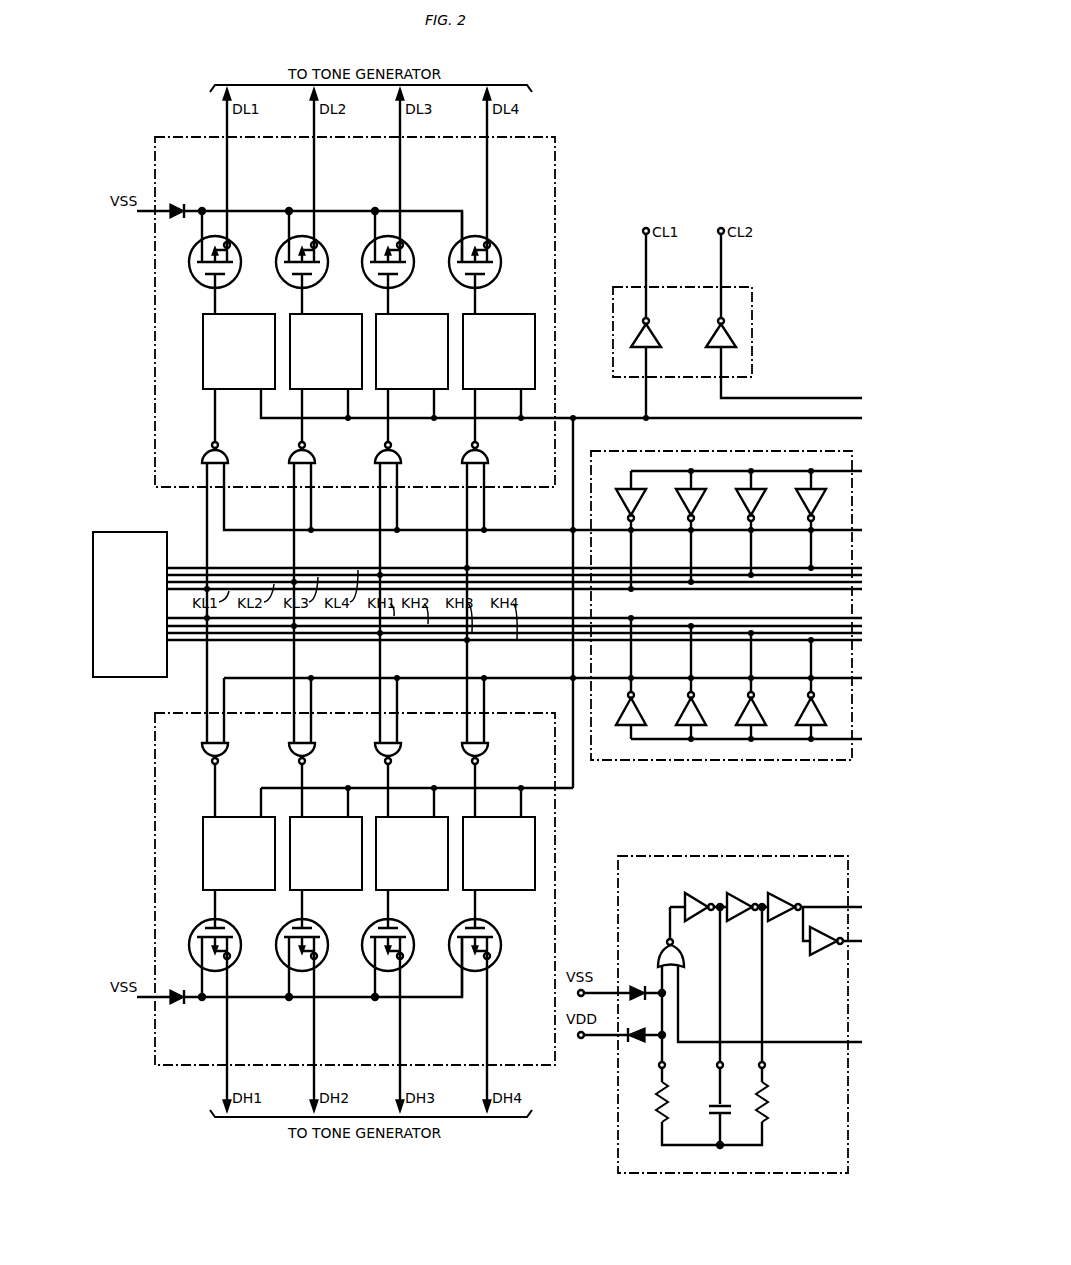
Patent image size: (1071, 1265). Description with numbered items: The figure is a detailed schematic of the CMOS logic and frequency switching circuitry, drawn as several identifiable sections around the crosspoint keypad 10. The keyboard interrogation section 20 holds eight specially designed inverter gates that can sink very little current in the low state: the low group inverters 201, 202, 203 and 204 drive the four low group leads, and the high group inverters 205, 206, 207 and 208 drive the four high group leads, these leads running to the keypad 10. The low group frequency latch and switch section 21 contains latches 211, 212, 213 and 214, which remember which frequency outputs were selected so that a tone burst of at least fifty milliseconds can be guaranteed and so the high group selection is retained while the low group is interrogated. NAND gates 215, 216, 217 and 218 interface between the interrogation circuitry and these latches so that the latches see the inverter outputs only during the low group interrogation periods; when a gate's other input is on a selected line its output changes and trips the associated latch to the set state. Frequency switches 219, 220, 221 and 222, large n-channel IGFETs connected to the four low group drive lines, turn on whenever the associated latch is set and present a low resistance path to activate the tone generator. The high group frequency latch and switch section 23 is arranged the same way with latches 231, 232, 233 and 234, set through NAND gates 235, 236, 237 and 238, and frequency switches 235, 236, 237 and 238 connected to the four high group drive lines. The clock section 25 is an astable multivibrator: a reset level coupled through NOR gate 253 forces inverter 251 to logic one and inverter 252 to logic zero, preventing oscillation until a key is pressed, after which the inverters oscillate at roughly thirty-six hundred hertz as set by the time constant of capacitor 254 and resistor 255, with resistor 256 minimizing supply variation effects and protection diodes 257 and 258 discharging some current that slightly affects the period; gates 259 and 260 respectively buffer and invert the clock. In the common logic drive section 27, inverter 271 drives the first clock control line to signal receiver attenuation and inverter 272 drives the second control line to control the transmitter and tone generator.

The keypad 10 is at (128, 534).
The keyboard interrogation section 20 is at (721, 748).
The low group frequency latch and switch section 21 is at (170, 327).
The high group frequency latch and switch section 23 is at (170, 850).
The clock section 25 is at (761, 859).
The common logic drive section 27 is at (745, 350).
The low group inverter 201 is at (640, 505).
The low group inverter 202 is at (700, 505).
The low group inverter 203 is at (760, 505).
The low group inverter 204 is at (820, 505).
The high group inverter 205 is at (641, 708).
The high group inverter 206 is at (701, 708).
The high group inverter 207 is at (761, 708).
The high group inverter 208 is at (821, 708).
The latch 211 is at (244, 326).
The latch 212 is at (331, 326).
The latch 213 is at (417, 326).
The latch 214 is at (504, 326).
The NAND gate 215 is at (229, 426).
The NAND gate 216 is at (316, 426).
The NAND gate 217 is at (402, 426).
The NAND gate 218 is at (489, 426).
The frequency switch 219 is at (226, 262).
The frequency switch 220 is at (313, 262).
The frequency switch 221 is at (399, 262).
The frequency switch 222 is at (486, 262).
The latch 231 is at (245, 878).
The latch 232 is at (332, 878).
The latch 233 is at (418, 878).
The latch 234 is at (505, 878).
The NAND gate / frequency switch 235 is at (226, 870).
The NAND gate / frequency switch 236 is at (313, 870).
The NAND gate / frequency switch 237 is at (399, 870).
The NAND gate / frequency switch 238 is at (486, 870).
The inverter 251 is at (698, 896).
The inverter 252 is at (742, 896).
The NOR gate 253 is at (686, 953).
The capacitor 254 is at (709, 1099).
The resistor 255 is at (778, 1102).
The resistor 256 is at (647, 1102).
The diode 257 is at (637, 982).
The diode 258 is at (634, 1044).
The gate 259 is at (784, 896).
The gate 260 is at (824, 950).
The inverter 271 is at (655, 332).
The inverter 272 is at (730, 332).